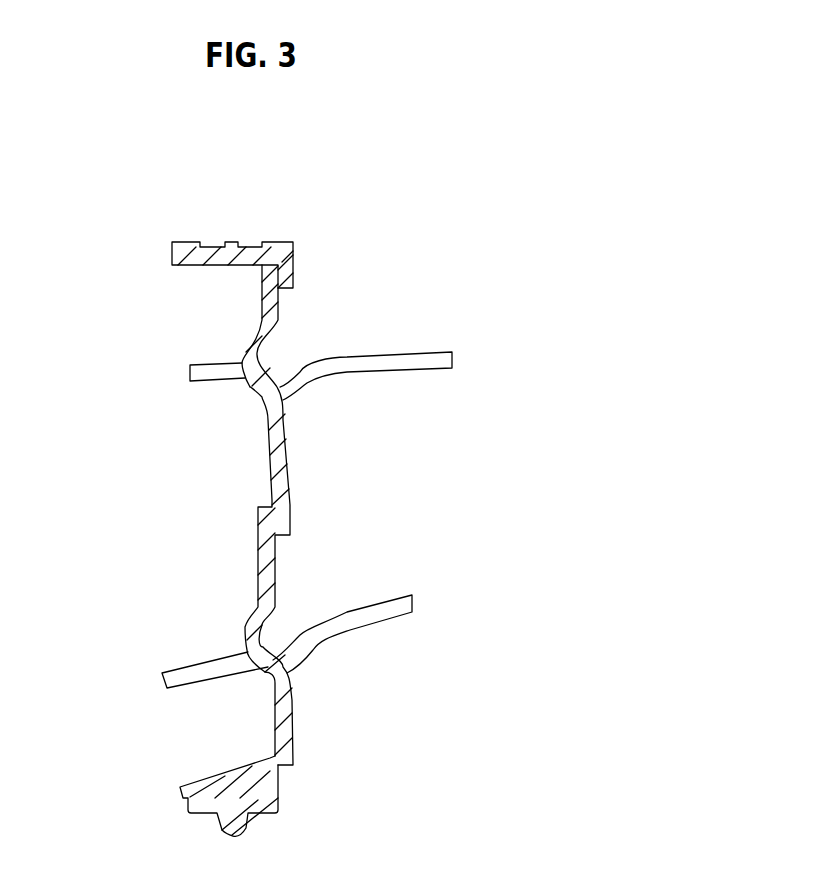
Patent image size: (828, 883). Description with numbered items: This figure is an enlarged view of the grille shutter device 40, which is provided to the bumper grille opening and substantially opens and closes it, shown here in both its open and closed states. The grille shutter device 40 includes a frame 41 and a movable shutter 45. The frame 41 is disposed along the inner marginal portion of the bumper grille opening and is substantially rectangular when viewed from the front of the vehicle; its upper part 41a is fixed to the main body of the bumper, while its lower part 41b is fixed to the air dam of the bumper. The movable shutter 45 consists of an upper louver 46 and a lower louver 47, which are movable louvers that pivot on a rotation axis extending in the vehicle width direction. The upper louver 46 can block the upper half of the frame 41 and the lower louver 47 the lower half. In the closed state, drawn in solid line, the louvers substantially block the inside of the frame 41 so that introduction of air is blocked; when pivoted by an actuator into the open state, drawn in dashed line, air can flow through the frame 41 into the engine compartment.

The grille shutter device 40 is at (115, 263).
The frame 41 is at (304, 539).
The upper part of the frame 41a is at (293, 253).
The lower part of the frame 41b is at (280, 785).
The movable shutter 45 is at (331, 515).
The upper louver 46 is at (383, 352).
The lower louver 47 is at (365, 598).